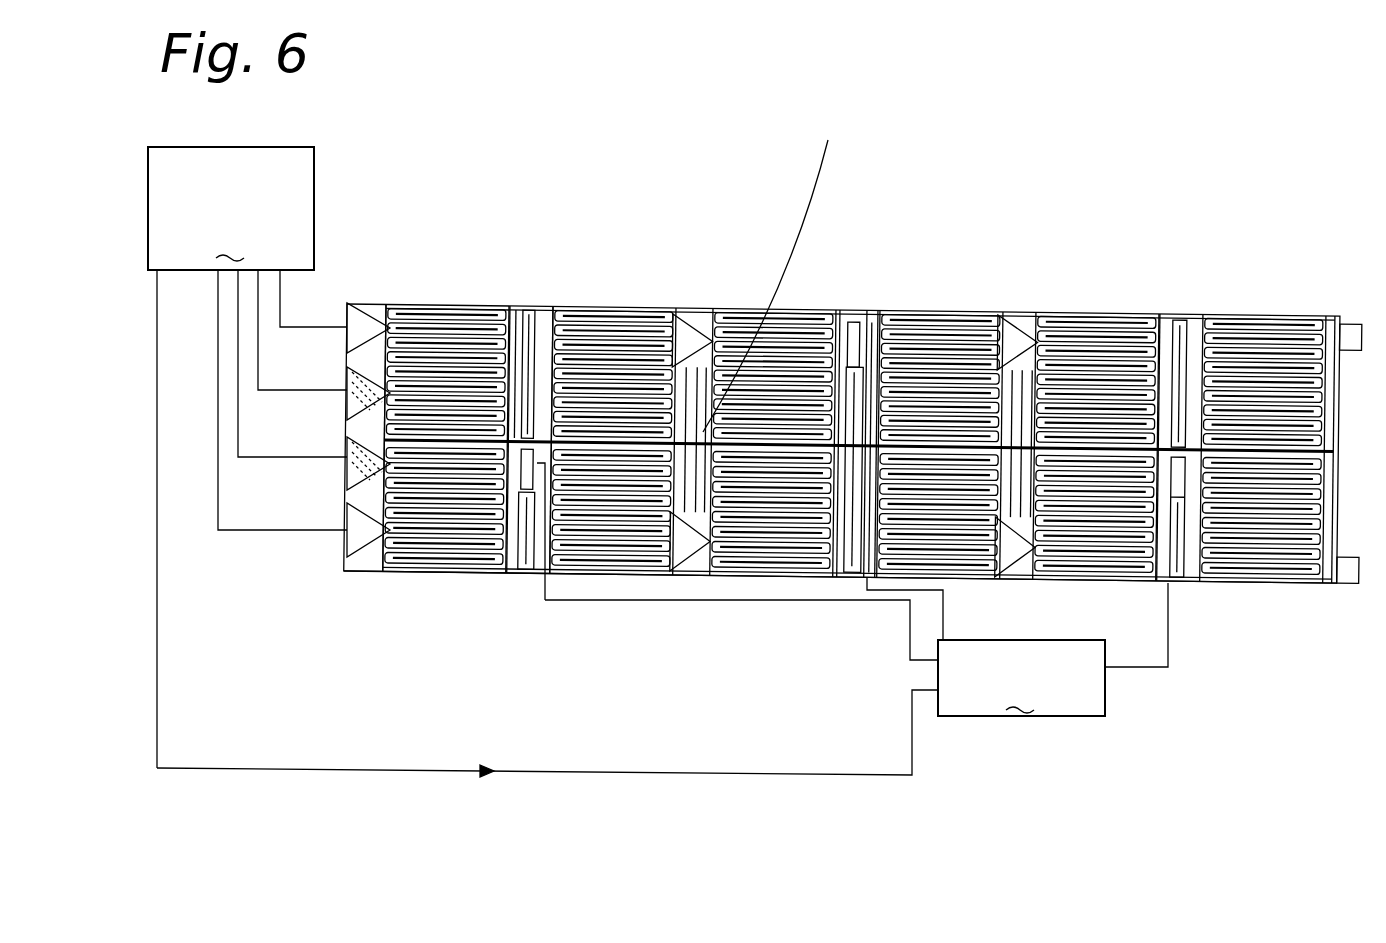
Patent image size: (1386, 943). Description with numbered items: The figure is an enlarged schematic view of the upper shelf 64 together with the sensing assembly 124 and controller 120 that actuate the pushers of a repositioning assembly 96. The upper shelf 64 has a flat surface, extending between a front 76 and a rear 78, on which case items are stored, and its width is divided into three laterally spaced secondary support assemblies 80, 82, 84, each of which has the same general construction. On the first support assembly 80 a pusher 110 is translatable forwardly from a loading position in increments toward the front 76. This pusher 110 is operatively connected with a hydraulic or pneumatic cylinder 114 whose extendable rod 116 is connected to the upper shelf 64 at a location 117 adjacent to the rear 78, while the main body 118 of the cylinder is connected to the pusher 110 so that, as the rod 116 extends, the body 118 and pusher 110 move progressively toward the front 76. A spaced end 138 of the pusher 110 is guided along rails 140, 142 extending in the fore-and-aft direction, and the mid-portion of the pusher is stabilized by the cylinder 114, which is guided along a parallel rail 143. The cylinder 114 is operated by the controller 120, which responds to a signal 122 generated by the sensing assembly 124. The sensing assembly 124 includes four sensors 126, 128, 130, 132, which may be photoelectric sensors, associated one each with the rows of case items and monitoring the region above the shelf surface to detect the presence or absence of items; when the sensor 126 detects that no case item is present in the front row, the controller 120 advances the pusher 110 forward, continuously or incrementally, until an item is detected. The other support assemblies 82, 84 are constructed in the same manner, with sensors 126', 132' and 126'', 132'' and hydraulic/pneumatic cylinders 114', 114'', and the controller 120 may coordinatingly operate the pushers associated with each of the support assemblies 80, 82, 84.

The repositioning assembly 96 is at (853, 319).
The sensing assembly 124 is at (248, 454).
The controller 120 is at (1021, 678).
The signal 122 is at (547, 725).
The sensor 132 is at (392, 258).
The sensor 130 is at (316, 399).
The sensor 128 is at (316, 470).
The sensor 126 is at (334, 600).
The secondary support assembly 80 is at (536, 368).
The rear 78 is at (676, 369).
The upper shelf 64 is at (789, 370).
The secondary support assembly 82 is at (944, 346).
The secondary support assembly 84 is at (1275, 312).
The front 76 is at (840, 634).
The location 117 is at (542, 300).
The pusher 110 is at (1176, 280).
The extendable rod 116 is at (575, 300).
The main body 118 is at (480, 573).
The parallel rail 143 is at (561, 594).
The hydraulic or pneumatic cylinder 114 is at (521, 580).
The rail 140 is at (643, 637).
The sensor 132' is at (714, 265).
The sensor 126' is at (749, 604).
The rail 142 is at (716, 532).
The spaced end 138 is at (771, 271).
The hydraulic/pneumatic cylinder 114' is at (900, 401).
The sensor 132'' is at (1033, 340).
The sensor 126'' is at (1077, 581).
The hydraulic/pneumatic cylinder 114'' is at (1188, 415).